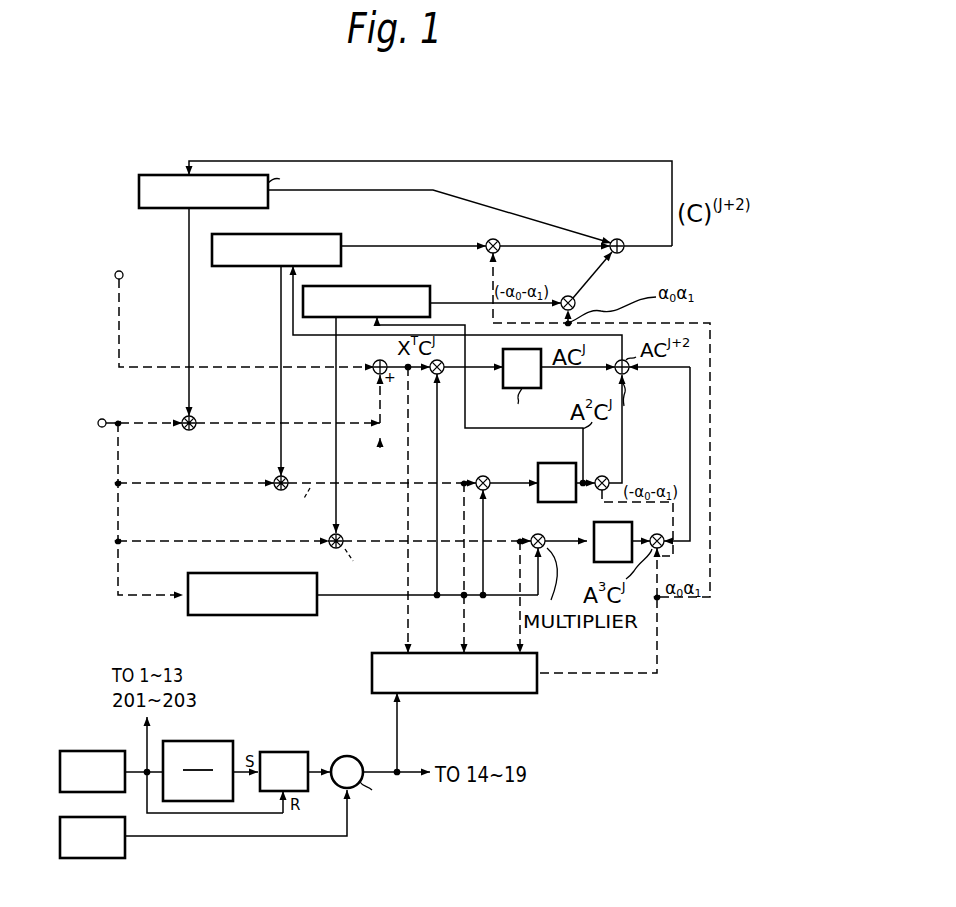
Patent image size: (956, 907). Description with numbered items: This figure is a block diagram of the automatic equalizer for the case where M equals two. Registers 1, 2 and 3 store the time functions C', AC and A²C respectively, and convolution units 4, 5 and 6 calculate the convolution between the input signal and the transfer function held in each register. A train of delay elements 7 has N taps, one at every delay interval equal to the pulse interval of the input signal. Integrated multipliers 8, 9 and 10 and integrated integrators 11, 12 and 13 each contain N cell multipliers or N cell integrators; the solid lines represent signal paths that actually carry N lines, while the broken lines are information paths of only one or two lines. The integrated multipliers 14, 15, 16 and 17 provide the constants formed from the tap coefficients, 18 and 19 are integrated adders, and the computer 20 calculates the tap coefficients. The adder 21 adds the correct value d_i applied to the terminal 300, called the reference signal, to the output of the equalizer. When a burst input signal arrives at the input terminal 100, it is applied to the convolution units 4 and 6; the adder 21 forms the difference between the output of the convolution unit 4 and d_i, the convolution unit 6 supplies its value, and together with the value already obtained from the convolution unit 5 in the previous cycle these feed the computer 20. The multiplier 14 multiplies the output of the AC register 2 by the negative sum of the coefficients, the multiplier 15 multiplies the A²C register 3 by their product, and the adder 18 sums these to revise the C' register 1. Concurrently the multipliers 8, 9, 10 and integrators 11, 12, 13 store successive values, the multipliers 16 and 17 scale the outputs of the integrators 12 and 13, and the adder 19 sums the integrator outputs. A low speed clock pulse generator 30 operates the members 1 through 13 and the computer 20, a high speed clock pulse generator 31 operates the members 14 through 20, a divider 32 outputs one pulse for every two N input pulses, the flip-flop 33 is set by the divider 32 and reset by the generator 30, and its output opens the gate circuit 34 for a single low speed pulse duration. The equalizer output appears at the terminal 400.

The C' register 1 is at (165, 175).
The AC register 2 is at (293, 234).
The A²C register 3 is at (390, 286).
The convolution unit 4 is at (206, 434).
The convolution unit 5 is at (288, 478).
The convolution unit 6 is at (342, 535).
The train of delay elements 7 is at (278, 615).
The integrated multiplier 8 is at (446, 355).
The integrated multiplier 9 is at (483, 476).
The integrated multiplier 10 is at (533, 535).
The integrated integrator 11 is at (541, 383).
The integrated integrator 12 is at (544, 462).
The integrated integrator 13 is at (633, 521).
The integrated multiplier 14 is at (498, 252).
The integrated multiplier 15 is at (575, 302).
The integrated multiplier 16 is at (604, 476).
The integrated multiplier 17 is at (653, 548).
The integrated adder 18 is at (623, 251).
The integrated adder 19 is at (628, 375).
The (α0, α1) computer 20 is at (487, 693).
The adder 21 is at (384, 364).
The low speed clock pulse generator 30 is at (90, 751).
The high speed clock pulse generator 31 is at (90, 858).
The divider 32 is at (206, 741).
The flip-flop 33 is at (285, 752).
The gate circuit 34 is at (357, 758).
The input terminal 100 is at (102, 419).
The terminal 300 is at (119, 258).
The terminal 400 is at (366, 459).